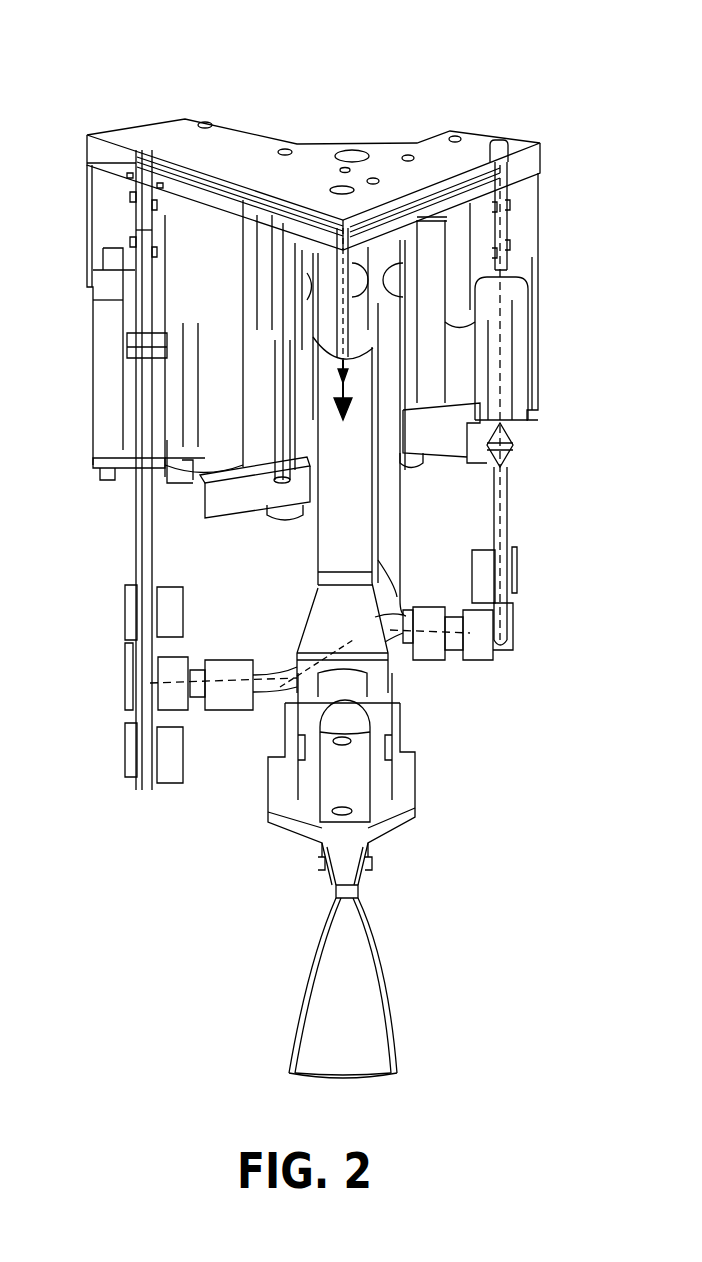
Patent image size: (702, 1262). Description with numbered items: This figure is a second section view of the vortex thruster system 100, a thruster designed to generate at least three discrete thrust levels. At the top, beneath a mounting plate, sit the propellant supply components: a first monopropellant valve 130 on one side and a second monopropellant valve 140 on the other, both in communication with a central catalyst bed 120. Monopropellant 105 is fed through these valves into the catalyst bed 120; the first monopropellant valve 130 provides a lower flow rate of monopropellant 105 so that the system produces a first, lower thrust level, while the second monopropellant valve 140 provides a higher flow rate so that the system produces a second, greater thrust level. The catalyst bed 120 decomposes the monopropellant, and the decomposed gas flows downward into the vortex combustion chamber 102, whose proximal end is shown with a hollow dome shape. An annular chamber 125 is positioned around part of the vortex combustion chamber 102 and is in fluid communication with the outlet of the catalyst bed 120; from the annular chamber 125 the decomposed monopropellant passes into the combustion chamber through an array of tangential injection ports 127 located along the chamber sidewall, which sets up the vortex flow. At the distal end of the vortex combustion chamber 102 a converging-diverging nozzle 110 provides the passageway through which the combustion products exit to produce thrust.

The vortex thruster system 100 is at (123, 63).
The vortex combustion chamber 102 is at (357, 770).
The monopropellant 105 is at (233, 190).
The converging-diverging nozzle 110 is at (350, 1000).
The catalyst bed 120 is at (352, 507).
The annular chamber 125 is at (305, 760).
The tangential injection ports 127 is at (342, 744).
The first monopropellant valve 130 is at (505, 353).
The second monopropellant valve 140 is at (113, 404).